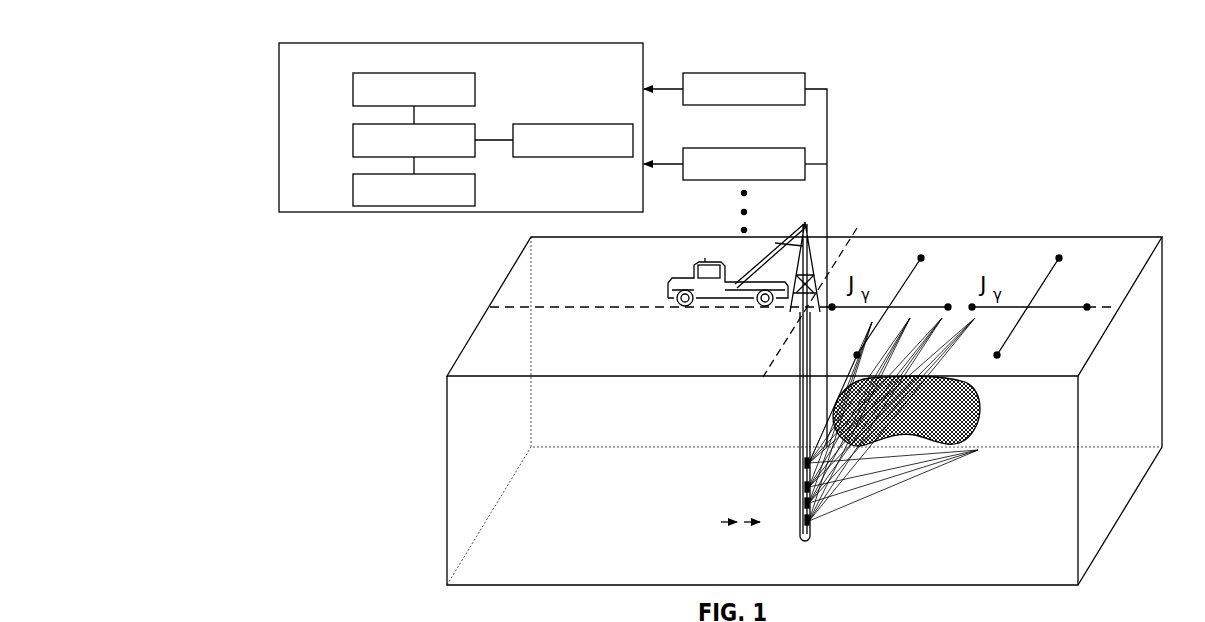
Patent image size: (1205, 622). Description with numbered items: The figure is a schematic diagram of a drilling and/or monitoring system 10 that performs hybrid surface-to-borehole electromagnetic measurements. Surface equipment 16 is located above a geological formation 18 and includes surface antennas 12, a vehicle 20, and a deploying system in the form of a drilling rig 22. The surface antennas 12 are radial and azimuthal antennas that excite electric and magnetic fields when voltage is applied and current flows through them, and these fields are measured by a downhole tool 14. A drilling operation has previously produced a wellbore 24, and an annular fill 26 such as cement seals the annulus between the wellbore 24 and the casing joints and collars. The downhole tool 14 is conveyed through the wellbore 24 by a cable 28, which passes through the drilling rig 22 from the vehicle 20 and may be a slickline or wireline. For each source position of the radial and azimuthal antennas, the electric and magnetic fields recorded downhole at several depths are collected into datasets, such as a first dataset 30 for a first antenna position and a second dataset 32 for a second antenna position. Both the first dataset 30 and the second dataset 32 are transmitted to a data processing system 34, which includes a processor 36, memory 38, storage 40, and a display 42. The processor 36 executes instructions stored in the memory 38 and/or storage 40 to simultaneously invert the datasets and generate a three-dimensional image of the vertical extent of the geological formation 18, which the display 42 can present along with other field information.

The drilling and/or monitoring system 10 is at (1083, 72).
The surface antennas 12 is at (1030, 302).
The downhole tool 14 is at (791, 510).
The surface equipment 16 is at (856, 231).
The geological formation 18 is at (991, 428).
The vehicle 20 is at (710, 264).
The drilling rig 22 is at (805, 222).
The wellbore 24 is at (798, 405).
The annular fill 26 is at (798, 420).
The cable 28 is at (800, 365).
The dataset 1 30 is at (760, 73).
The dataset 2 32 is at (760, 148).
The data processing system 34 is at (429, 127).
The processor 36 is at (353, 138).
The memory 38 is at (353, 88).
The storage 40 is at (353, 188).
The display 42 is at (561, 124).